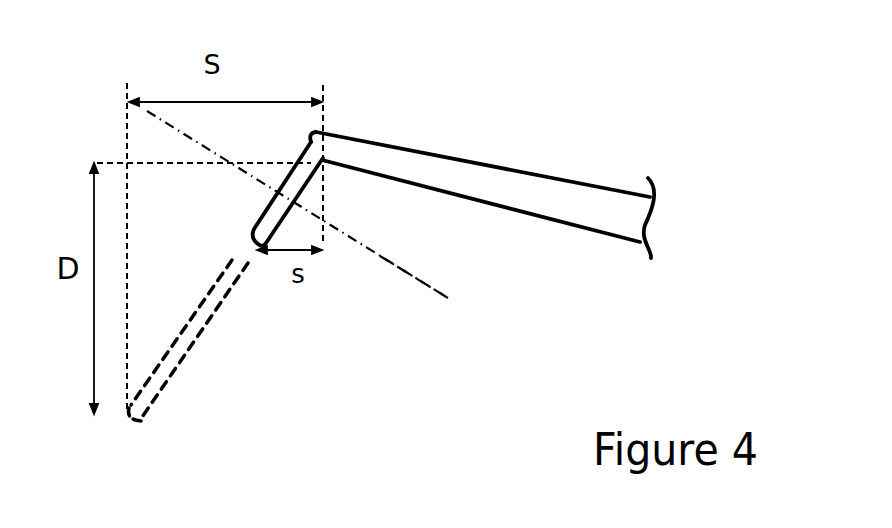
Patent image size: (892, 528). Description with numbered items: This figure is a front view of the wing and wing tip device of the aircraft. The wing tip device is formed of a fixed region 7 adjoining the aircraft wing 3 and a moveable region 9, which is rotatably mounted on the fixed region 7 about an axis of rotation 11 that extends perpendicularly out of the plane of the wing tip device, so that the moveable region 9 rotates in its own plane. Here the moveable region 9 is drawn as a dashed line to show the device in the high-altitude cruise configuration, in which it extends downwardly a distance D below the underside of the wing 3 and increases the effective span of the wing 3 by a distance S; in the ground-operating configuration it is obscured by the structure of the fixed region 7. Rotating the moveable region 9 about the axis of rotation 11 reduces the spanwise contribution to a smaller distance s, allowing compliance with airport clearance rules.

The aircraft wing 3 is at (502, 178).
The fixed region 7 is at (248, 222).
The moveable region 9 is at (150, 409).
The axis of rotation 11 is at (444, 282).